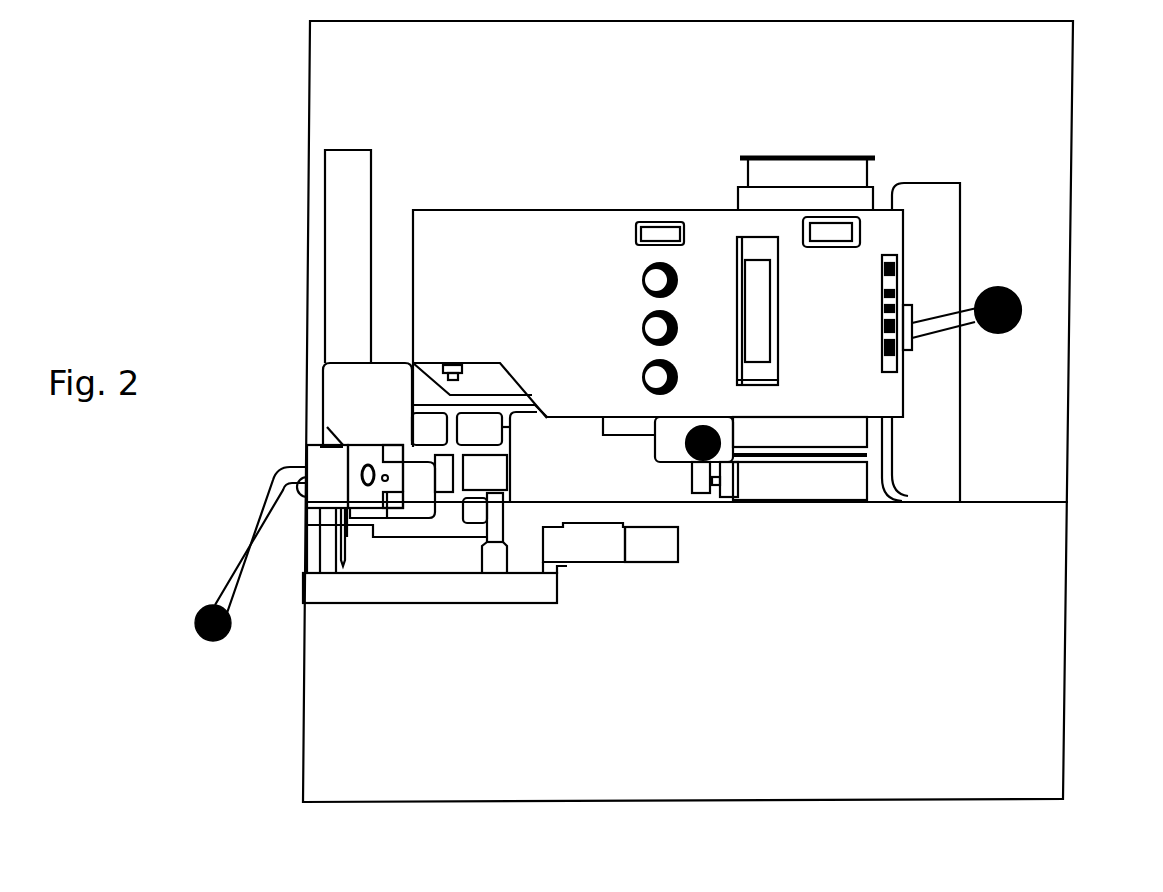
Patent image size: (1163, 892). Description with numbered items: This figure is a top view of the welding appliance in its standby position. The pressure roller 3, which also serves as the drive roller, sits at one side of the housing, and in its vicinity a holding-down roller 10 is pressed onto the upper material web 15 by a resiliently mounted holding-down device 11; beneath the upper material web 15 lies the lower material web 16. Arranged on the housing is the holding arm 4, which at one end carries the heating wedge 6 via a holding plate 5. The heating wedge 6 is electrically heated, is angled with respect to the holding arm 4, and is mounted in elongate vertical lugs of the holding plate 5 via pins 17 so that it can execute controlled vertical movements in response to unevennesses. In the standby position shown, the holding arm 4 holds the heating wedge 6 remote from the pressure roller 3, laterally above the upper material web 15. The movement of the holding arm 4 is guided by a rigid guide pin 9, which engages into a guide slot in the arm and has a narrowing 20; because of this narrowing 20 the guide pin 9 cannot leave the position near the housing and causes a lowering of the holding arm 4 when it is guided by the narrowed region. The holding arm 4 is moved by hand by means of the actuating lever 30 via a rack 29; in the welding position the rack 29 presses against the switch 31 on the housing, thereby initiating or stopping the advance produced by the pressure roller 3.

The pressure roller 3 is at (812, 485).
The holding arm 4 is at (425, 593).
The holding plate 5 is at (578, 548).
The heating wedge 6 is at (655, 550).
The guide pin 9 is at (487, 548).
The holding-down roller 10 is at (733, 485).
The holding-down device 11 is at (683, 450).
The upper material web 15 is at (1060, 217).
The lower material web 16 is at (1057, 608).
The pins 17 is at (630, 562).
The narrowing 20 is at (503, 527).
The rack 29 is at (313, 535).
The actuating lever 30 is at (217, 600).
The switch 31 is at (455, 363).